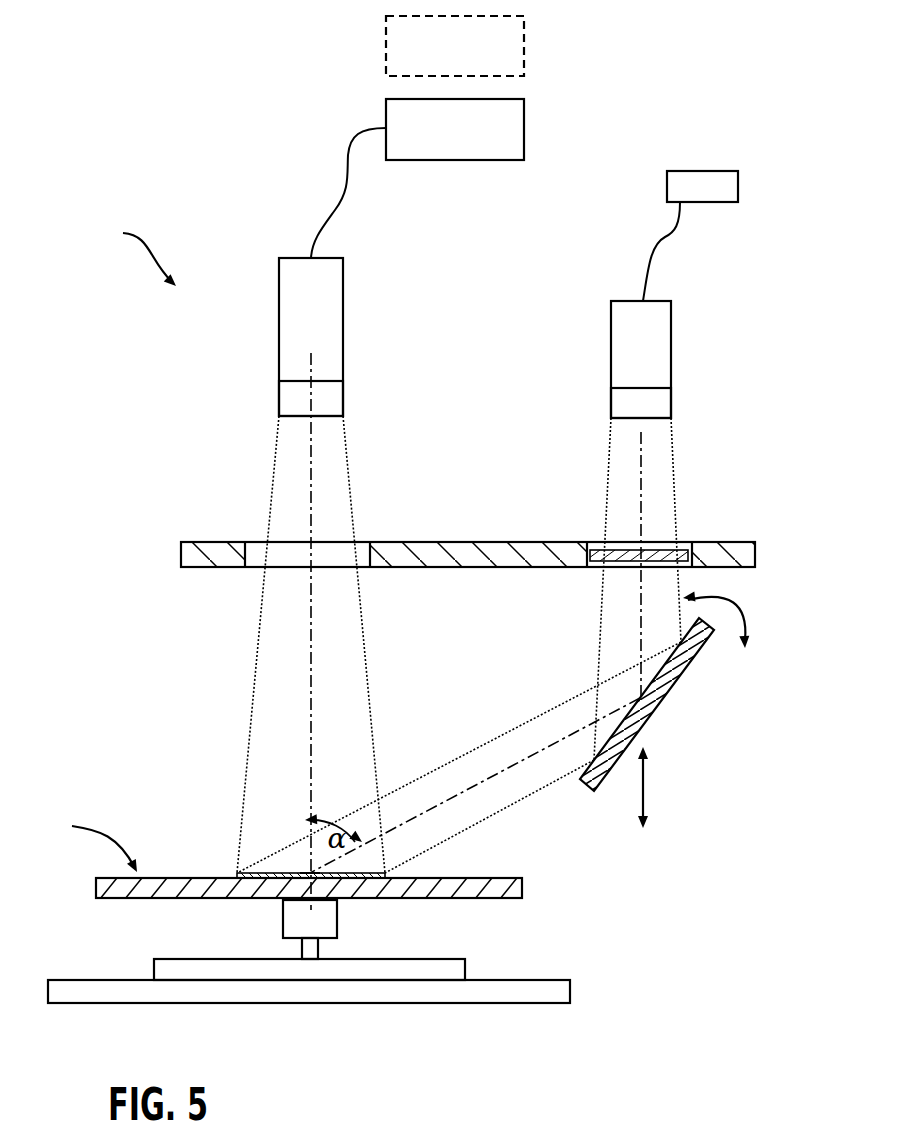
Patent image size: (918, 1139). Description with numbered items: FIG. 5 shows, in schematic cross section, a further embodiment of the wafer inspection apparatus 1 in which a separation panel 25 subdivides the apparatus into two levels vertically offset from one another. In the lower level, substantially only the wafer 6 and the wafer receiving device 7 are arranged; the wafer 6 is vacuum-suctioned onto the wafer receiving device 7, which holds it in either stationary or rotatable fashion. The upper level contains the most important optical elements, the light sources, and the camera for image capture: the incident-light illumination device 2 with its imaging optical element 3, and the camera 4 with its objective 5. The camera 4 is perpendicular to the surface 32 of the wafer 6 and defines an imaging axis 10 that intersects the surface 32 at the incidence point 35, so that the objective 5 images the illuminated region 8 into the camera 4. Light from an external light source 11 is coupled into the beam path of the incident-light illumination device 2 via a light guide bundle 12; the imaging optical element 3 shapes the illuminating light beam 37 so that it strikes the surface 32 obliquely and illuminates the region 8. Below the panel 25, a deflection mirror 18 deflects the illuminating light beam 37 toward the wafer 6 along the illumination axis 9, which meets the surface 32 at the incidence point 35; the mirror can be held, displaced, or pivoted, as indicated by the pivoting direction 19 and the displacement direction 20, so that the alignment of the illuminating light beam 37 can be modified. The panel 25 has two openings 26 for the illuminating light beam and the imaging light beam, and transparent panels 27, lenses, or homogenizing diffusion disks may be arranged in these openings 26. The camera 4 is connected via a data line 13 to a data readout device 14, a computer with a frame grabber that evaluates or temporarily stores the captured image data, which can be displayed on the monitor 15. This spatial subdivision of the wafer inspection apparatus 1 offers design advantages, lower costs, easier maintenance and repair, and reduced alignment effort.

The wafer inspection apparatus 1 is at (139, 251).
The incident-light illumination device 2 is at (661, 347).
The imaging optical element 3 is at (621, 404).
The camera 4 is at (332, 317).
The objective 5 is at (332, 402).
The wafer 6 is at (522, 890).
The wafer receiving device 7 is at (330, 912).
The illuminated region 8 is at (253, 873).
The illumination axis 9 is at (507, 763).
The imaging axis 10 is at (311, 611).
The external light source 11 is at (703, 171).
The light guide bundle 12 is at (668, 230).
The data line 13 is at (348, 176).
The data readout device 14 is at (386, 108).
The monitor 15 is at (386, 52).
The deflection mirror 18 is at (665, 688).
The tilting direction of mirror 19 is at (745, 605).
The displacement direction of mirror 20 is at (645, 783).
The panel 25 is at (232, 545).
The openings 26 is at (363, 548).
The transparent panels 27 is at (596, 548).
The surface 32 is at (282, 852).
The incidence point 35 is at (290, 873).
The illuminating light beam 37 is at (505, 802).